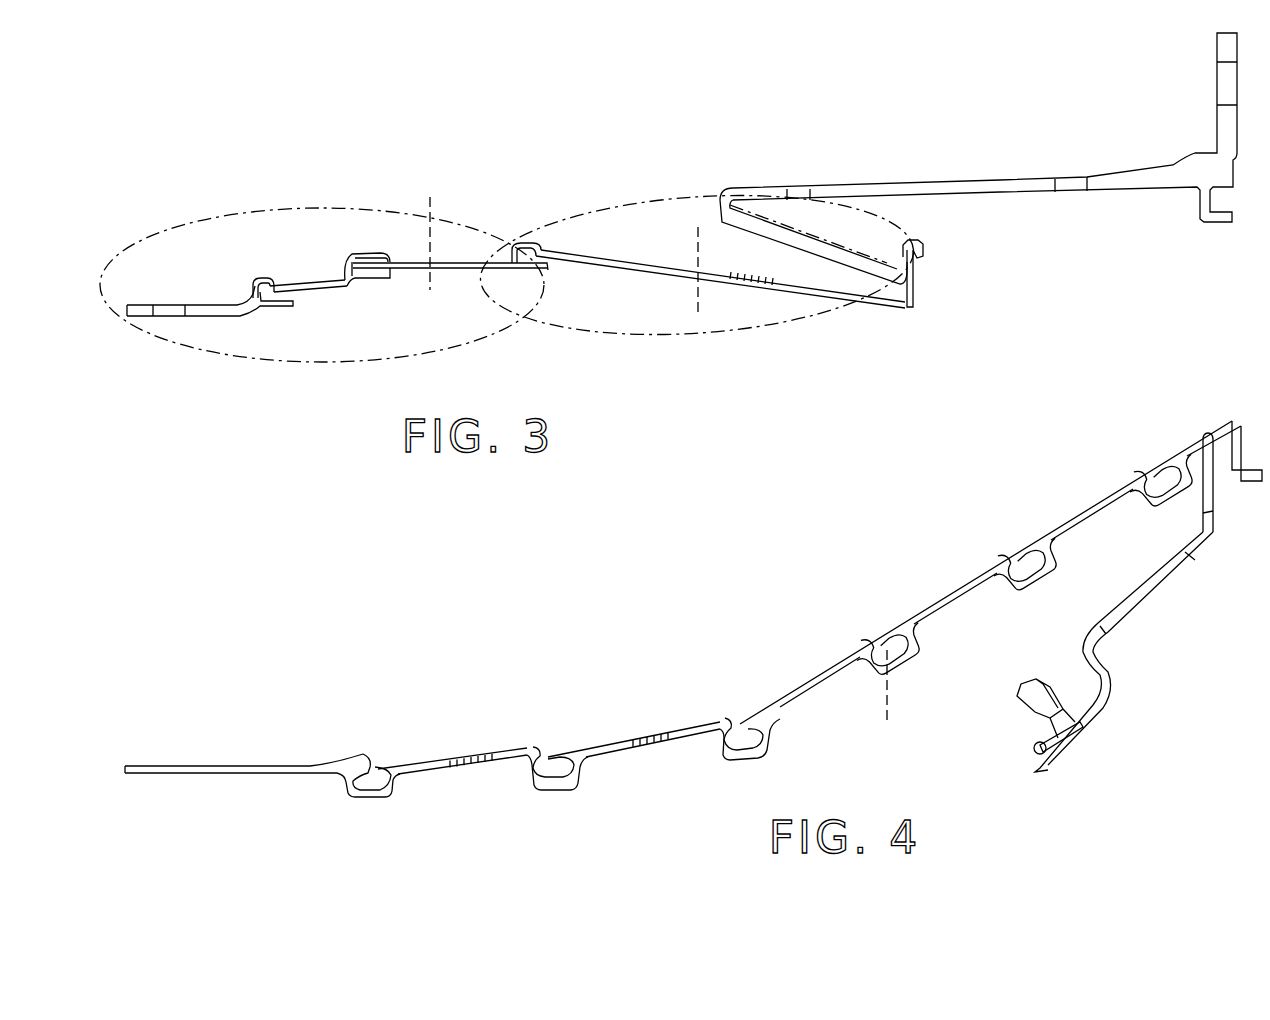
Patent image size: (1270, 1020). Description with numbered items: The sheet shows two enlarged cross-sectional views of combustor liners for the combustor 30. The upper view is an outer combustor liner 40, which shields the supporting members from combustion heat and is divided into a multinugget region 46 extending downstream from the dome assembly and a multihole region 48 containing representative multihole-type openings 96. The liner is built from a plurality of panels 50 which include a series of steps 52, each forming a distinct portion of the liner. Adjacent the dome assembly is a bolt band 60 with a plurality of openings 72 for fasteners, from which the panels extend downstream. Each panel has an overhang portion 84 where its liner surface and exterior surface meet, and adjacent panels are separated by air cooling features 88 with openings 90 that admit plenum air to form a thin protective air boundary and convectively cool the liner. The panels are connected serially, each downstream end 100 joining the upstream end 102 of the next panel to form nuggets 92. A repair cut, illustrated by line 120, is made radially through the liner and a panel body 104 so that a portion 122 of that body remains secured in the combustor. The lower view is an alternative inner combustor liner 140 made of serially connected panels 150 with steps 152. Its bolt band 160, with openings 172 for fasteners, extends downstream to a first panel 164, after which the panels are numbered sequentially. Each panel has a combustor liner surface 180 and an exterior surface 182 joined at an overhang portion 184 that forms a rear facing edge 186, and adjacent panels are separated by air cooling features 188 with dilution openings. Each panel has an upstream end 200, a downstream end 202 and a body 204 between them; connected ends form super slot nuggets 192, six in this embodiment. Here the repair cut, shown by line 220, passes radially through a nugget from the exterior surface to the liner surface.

In FIG. 3, the combustor 30 is at (280, 112).
In FIG. 3, the combustor liner 40 is at (579, 132).
In FIG. 3, the multinugget region 46 is at (326, 207).
In FIG. 3, the multihole region 48 is at (612, 200).
In FIG. 3, the panel 50 is at (418, 258).
In FIG. 3, the step 52 is at (300, 320).
In FIG. 3, the bolt band 60 is at (190, 304).
In FIG. 3, the opening 72 is at (153, 303).
In FIG. 3, the overhang portion 84 is at (288, 322).
In FIG. 3, the air cooling feature 88 is at (362, 265).
In FIG. 3, the opening 90 is at (513, 252).
In FIG. 3, the nugget 92 is at (338, 252).
In FIG. 3, the opening 96 is at (762, 263).
In FIG. 4, the opening 96 is at (480, 745).
In FIG. 3, the downstream end 100 is at (373, 303).
In FIG. 3, the upstream end 102 is at (287, 313).
In FIG. 3, the panel body 104 is at (313, 290).
In FIG. 3, the line 120 is at (437, 204).
In FIG. 3, the portion 122 is at (803, 287).
In FIG. 4, the inner combustor liner 140 is at (325, 615).
In FIG. 4, the panel 150 is at (248, 775).
In FIG. 4, the step 152 is at (377, 748).
In FIG. 4, the bolt band 160 is at (233, 767).
In FIG. 4, the first panel 164 is at (428, 767).
In FIG. 4, the opening 172 is at (147, 777).
In FIG. 4, the combustor liner surface 180 is at (1087, 503).
In FIG. 4, the exterior surface 182 is at (937, 620).
In FIG. 4, the overhang portion 184 is at (352, 733).
In FIG. 4, the rear facing edge 186 is at (363, 755).
In FIG. 4, the air cooling feature 188 is at (383, 760).
In FIG. 4, the nugget 192 is at (917, 672).
In FIG. 4, the upstream end 200 is at (403, 797).
In FIG. 4, the downstream end 202 is at (523, 783).
In FIG. 4, the body 204 is at (610, 757).
In FIG. 4, the line 220 is at (887, 713).